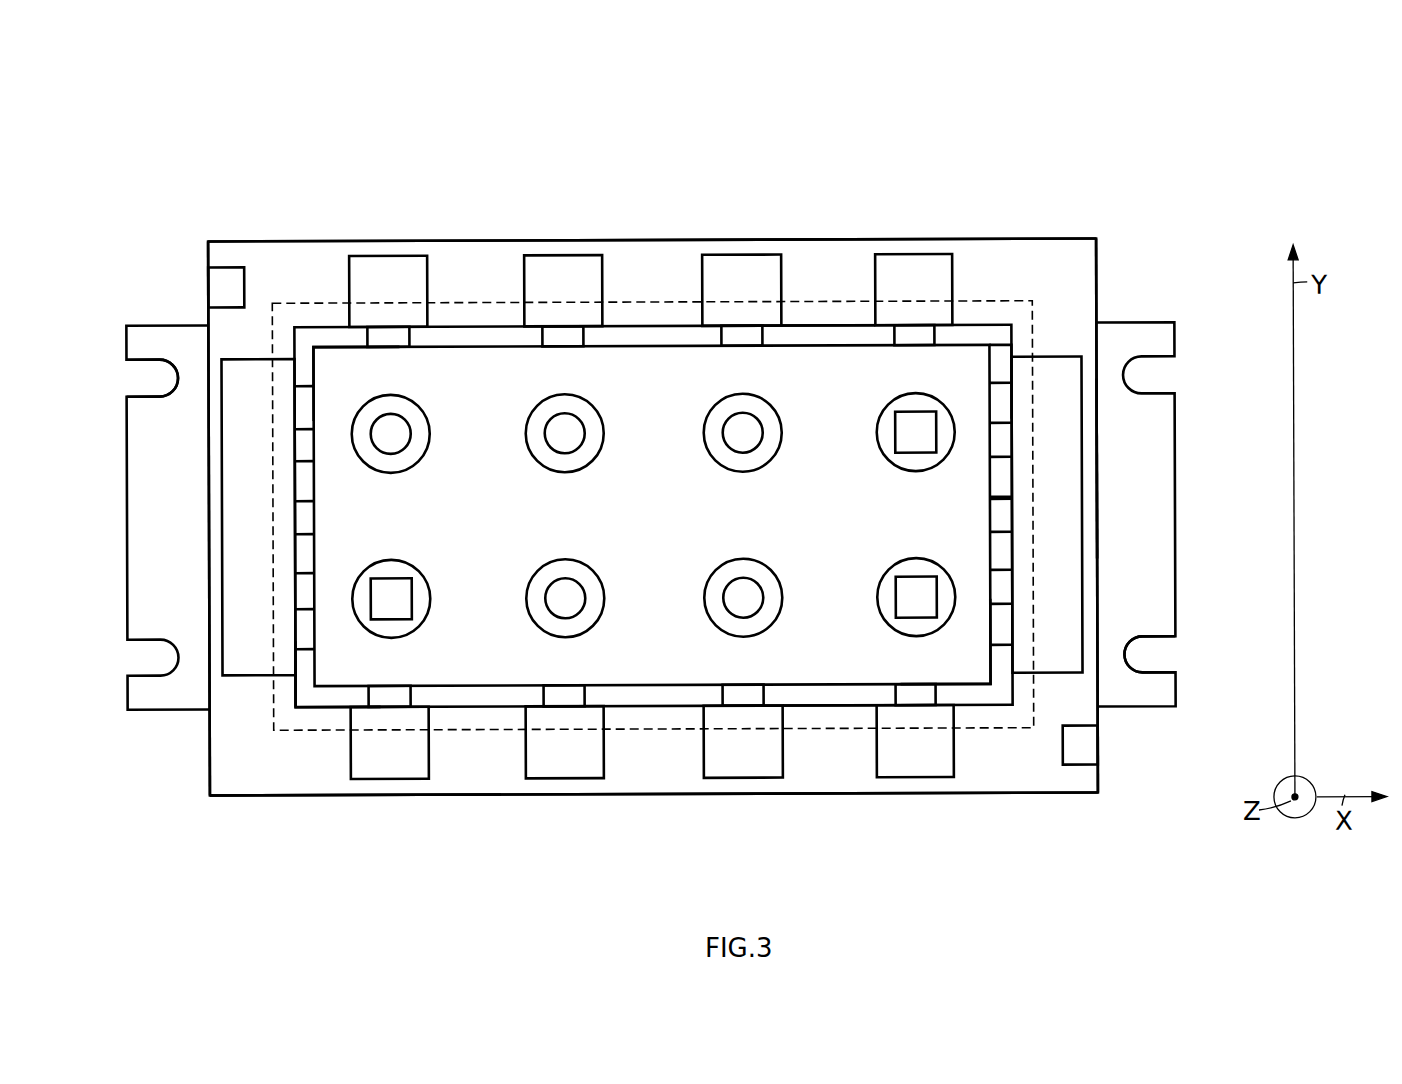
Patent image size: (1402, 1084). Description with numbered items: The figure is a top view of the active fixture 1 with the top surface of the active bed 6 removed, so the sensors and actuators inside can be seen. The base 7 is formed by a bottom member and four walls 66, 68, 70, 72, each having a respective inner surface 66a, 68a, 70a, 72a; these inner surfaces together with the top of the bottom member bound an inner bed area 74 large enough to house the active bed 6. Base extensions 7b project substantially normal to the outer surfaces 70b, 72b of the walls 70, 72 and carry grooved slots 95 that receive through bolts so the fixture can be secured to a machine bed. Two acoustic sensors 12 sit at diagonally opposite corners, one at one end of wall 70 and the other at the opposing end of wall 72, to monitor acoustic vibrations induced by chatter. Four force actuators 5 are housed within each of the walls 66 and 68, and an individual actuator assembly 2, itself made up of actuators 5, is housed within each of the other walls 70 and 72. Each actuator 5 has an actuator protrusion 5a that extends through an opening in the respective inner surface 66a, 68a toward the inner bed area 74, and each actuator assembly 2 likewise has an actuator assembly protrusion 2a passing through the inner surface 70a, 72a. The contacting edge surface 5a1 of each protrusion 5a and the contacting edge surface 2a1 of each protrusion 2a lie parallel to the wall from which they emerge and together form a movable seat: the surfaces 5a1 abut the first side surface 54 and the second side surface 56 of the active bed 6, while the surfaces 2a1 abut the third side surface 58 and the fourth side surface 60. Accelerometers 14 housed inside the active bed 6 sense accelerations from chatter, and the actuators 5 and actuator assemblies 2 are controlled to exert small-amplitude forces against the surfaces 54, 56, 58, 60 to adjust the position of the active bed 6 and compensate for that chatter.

The active fixture 1 is at (403, 182).
The actuator assembly 2 is at (253, 520).
The actuator assembly protrusion 2a is at (998, 626).
The contacting edge surface 2a1 is at (990, 543).
The force actuator 5 is at (898, 270).
The actuator protrusion 5a is at (920, 335).
The contacting edge surface 5a1 is at (577, 347).
The active bed 6 is at (693, 365).
The base 7 is at (1075, 251).
The base extension 7b is at (1153, 333).
The acoustic sensor 12 is at (233, 277).
The accelerometer 14 is at (902, 408).
The first side surface 54 is at (325, 690).
The second side surface 56 is at (503, 346).
The third side surface 58 is at (313, 358).
The fourth side surface 60 is at (992, 674).
The wall 66 is at (327, 772).
The inner surface 66a is at (830, 705).
The wall 68 is at (656, 265).
The inner surface 68a is at (802, 327).
The wall 70 is at (237, 325).
The inner surface 70a is at (295, 693).
The outer surface 70b is at (205, 435).
The wall 72 is at (1075, 273).
The inner surface 72a is at (1003, 337).
The outer surface 72b is at (1099, 442).
The inner bed area 74 is at (855, 693).
The slot 95 is at (147, 393).